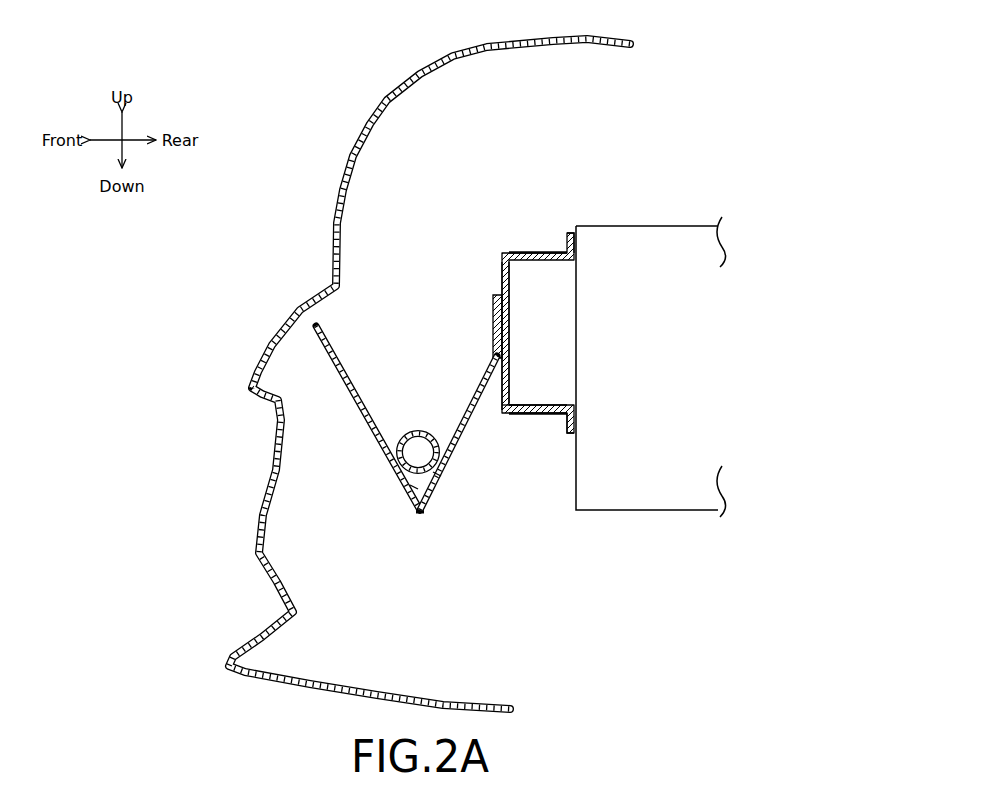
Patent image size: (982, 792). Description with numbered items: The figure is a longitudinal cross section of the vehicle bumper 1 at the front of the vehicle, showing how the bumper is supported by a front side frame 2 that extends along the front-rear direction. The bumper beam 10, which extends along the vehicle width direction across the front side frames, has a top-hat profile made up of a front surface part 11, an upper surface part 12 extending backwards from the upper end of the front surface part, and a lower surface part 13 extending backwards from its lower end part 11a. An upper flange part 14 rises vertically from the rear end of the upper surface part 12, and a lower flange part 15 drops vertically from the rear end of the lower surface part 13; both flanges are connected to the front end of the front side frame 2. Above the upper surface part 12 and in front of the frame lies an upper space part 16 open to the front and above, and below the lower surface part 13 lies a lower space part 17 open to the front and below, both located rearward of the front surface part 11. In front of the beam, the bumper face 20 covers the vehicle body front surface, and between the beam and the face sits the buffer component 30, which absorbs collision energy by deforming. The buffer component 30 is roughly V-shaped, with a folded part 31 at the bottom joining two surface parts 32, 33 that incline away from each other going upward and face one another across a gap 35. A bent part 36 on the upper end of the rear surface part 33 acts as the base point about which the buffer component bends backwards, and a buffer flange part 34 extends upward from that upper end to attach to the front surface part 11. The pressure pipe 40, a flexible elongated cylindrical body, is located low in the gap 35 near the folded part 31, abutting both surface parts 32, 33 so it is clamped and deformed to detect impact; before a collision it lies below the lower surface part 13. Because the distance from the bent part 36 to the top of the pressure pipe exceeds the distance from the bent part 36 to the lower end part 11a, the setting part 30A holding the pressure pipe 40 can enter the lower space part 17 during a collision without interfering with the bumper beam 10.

The vehicle bumper 1 is at (266, 134).
The front side frame 2 is at (666, 226).
The bumper beam 10 is at (507, 236).
The front surface part 11 is at (503, 278).
The lower end part of the front surface part 11a is at (507, 414).
The upper surface part 12 is at (547, 261).
The lower surface part 13 is at (548, 414).
The upper flange part 14 is at (578, 244).
The lower flange part 15 is at (578, 426).
The upper space part 16 is at (538, 236).
The lower space part 17 is at (538, 454).
The bumper face 20 is at (277, 431).
The buffer component 30 is at (433, 426).
The setting part 30A is at (441, 474).
The folded part 31 is at (420, 517).
The surface part 32 is at (362, 421).
The surface part 33 is at (456, 443).
The buffer flange part 34 is at (493, 323).
The gap 35 is at (418, 430).
The bent part 36 is at (505, 363).
The pressure pipe 40 is at (416, 485).